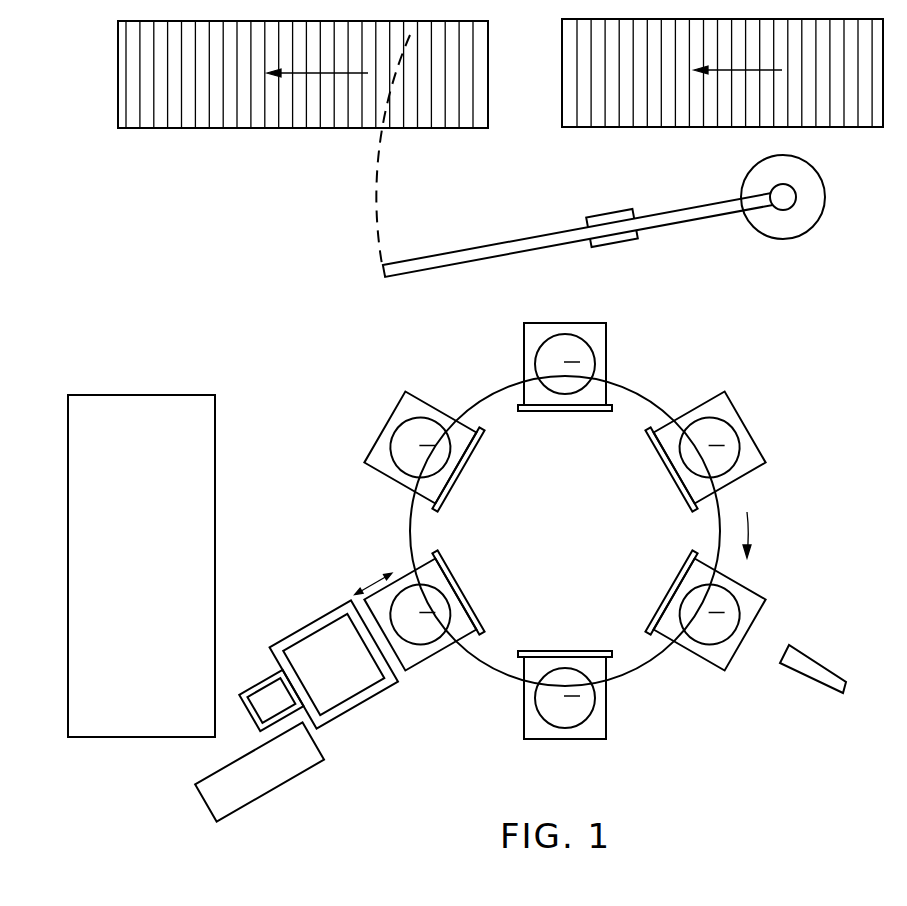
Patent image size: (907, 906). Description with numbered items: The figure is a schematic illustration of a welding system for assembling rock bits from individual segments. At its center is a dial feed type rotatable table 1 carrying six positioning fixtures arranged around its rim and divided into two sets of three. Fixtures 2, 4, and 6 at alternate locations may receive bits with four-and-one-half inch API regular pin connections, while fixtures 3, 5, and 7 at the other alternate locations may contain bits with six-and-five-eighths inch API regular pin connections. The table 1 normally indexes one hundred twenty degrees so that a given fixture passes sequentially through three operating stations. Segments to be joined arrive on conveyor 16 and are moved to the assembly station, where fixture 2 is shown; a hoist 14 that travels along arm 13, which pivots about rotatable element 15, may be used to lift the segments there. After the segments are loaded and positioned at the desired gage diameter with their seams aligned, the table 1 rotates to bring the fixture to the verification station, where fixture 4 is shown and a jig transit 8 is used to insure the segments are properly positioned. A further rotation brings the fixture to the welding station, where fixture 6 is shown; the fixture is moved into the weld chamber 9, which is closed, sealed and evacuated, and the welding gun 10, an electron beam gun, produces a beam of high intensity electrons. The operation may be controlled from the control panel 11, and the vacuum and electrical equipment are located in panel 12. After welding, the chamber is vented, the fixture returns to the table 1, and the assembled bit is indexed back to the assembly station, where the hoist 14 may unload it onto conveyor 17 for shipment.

The rotatable table 1 is at (630, 403).
The fixture 2 is at (590, 336).
The fixture 3 is at (748, 458).
The fixture 4 is at (722, 658).
The fixture 5 is at (590, 728).
The fixture 6 is at (413, 655).
The fixture 7 is at (378, 454).
The jig transit 8 is at (818, 683).
The weld chamber 9 is at (347, 712).
The welding gun 10 is at (261, 677).
The control panel 11 is at (282, 786).
The panel 12 is at (137, 738).
The arm 13 is at (676, 229).
The hoist 14 is at (614, 218).
The rotatable element 15 is at (799, 197).
The conveyor 16 is at (573, 81).
The conveyor 17 is at (481, 54).